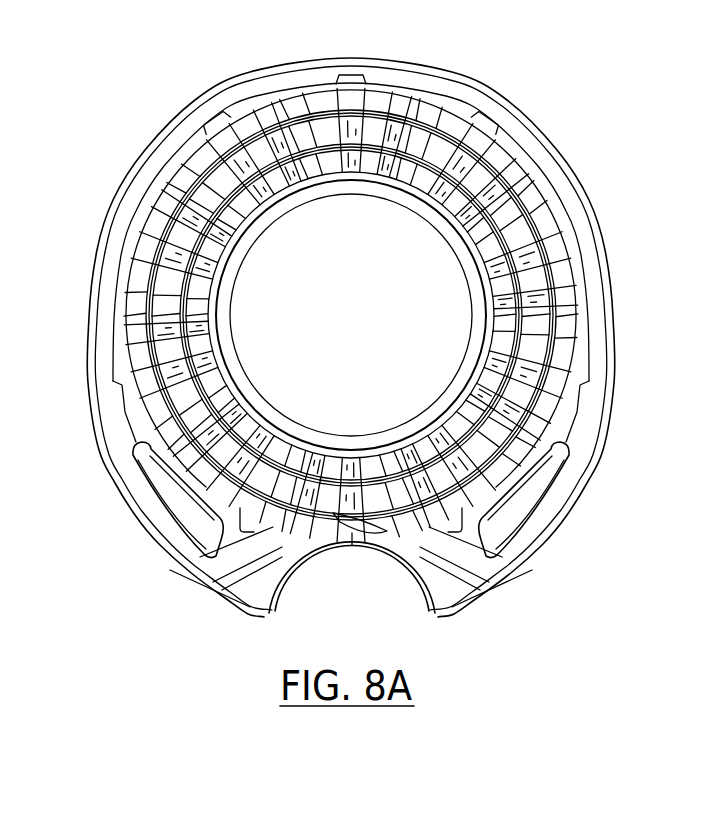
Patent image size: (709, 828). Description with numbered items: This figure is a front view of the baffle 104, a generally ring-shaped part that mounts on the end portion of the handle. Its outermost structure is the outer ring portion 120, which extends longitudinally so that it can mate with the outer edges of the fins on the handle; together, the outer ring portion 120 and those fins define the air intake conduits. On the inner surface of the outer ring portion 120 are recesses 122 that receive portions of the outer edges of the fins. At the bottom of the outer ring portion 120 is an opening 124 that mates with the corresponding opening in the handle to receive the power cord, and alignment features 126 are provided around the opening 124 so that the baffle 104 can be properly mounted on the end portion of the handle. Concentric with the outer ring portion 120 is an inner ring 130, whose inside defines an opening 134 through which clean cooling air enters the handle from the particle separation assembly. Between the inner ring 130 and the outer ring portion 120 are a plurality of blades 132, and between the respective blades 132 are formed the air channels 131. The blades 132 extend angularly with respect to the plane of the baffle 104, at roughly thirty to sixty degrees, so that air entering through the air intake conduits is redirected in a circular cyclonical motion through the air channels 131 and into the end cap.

The baffle 104 is at (74, 127).
The outer ring portion 120 is at (522, 113).
The recesses 122 is at (351, 72).
The opening 124 is at (360, 570).
The alignment features 126 is at (250, 577).
The inner ring 130 is at (263, 397).
The air channels 131 is at (183, 230).
The blades 132 is at (173, 257).
The opening 134 is at (420, 262).